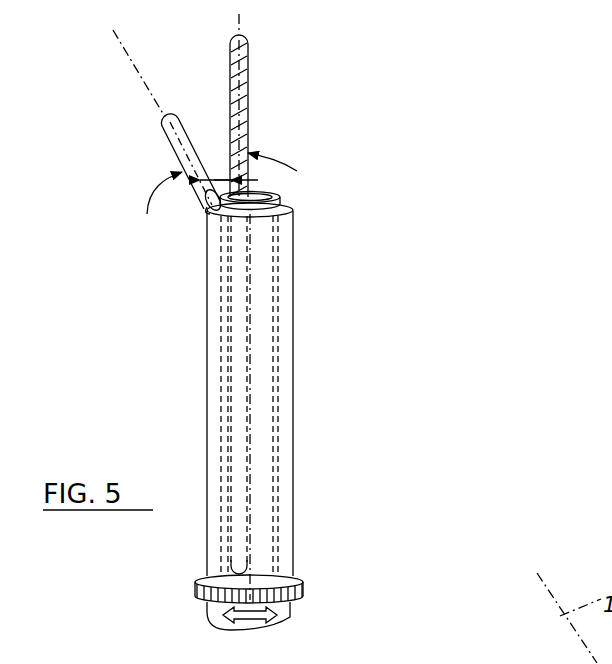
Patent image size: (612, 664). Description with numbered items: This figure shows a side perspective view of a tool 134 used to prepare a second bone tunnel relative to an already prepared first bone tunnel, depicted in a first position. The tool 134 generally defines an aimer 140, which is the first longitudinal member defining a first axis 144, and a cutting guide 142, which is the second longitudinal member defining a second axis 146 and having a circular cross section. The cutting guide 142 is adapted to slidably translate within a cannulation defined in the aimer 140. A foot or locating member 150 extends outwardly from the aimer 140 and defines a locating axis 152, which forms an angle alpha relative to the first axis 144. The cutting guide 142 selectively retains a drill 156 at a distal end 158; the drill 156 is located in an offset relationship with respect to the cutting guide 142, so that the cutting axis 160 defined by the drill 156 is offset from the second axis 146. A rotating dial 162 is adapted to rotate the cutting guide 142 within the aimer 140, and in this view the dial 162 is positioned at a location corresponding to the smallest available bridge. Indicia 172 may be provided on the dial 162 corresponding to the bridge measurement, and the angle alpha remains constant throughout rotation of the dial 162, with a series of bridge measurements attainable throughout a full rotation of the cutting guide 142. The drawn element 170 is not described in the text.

The tool 134 is at (367, 307).
The aimer 140 is at (293, 338).
The cutting guide 142 is at (286, 203).
The first axis 144 is at (250, 304).
The second axis 146 is at (249, 378).
The locating member 150 is at (162, 133).
The locating axis 152 is at (133, 72).
The drill 156 is at (249, 90).
The distal end 158 is at (211, 213).
The cutting axis 160 is at (241, 25).
The rotating dial 162 is at (305, 577).
The channel 170 is at (279, 206).
The indicia 172 is at (216, 592).